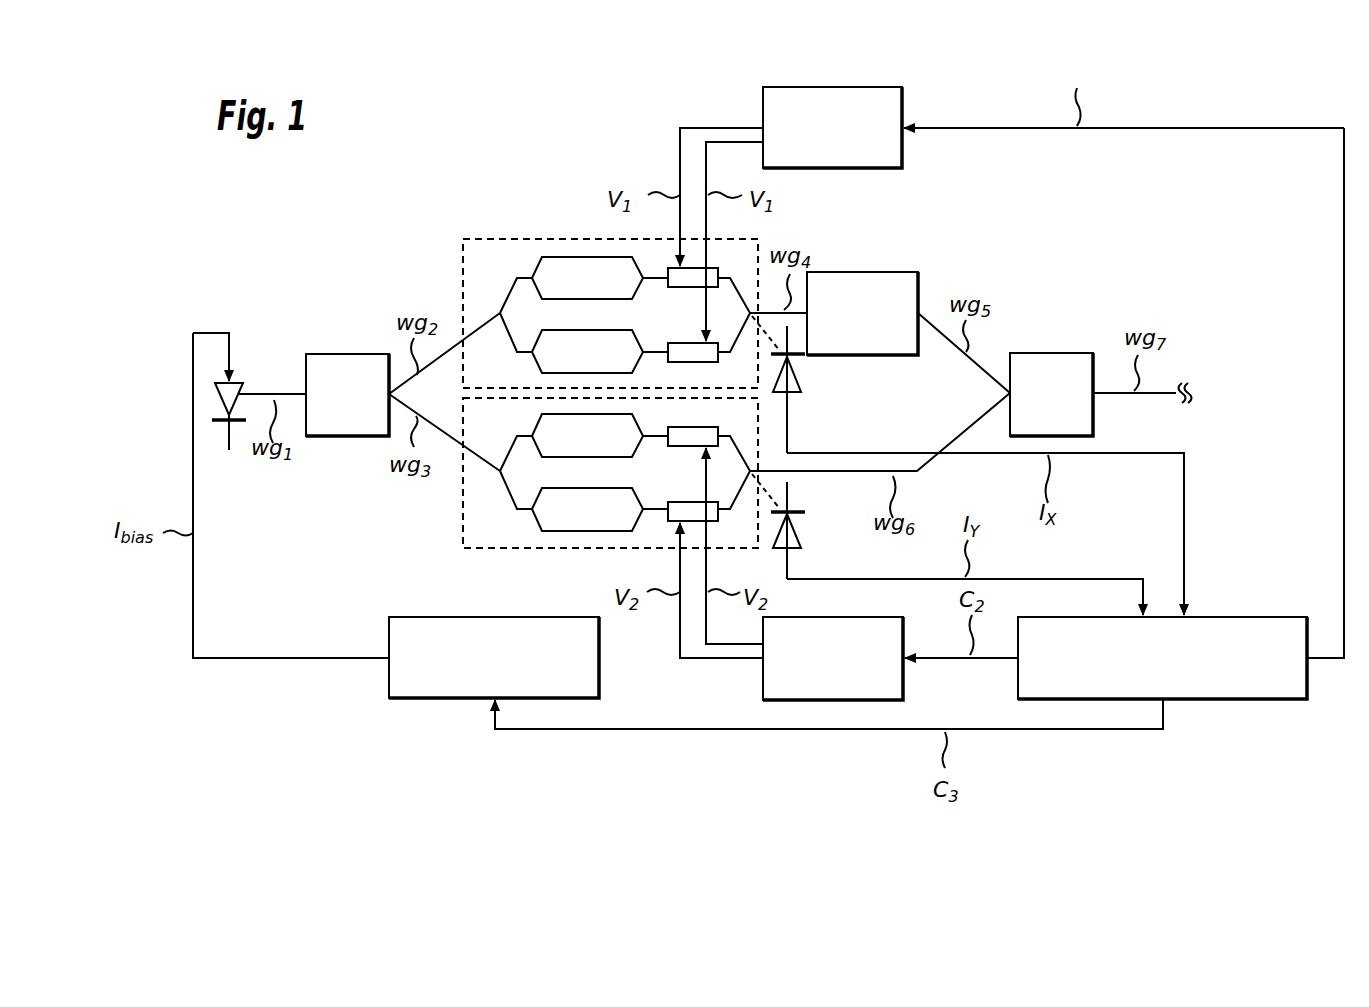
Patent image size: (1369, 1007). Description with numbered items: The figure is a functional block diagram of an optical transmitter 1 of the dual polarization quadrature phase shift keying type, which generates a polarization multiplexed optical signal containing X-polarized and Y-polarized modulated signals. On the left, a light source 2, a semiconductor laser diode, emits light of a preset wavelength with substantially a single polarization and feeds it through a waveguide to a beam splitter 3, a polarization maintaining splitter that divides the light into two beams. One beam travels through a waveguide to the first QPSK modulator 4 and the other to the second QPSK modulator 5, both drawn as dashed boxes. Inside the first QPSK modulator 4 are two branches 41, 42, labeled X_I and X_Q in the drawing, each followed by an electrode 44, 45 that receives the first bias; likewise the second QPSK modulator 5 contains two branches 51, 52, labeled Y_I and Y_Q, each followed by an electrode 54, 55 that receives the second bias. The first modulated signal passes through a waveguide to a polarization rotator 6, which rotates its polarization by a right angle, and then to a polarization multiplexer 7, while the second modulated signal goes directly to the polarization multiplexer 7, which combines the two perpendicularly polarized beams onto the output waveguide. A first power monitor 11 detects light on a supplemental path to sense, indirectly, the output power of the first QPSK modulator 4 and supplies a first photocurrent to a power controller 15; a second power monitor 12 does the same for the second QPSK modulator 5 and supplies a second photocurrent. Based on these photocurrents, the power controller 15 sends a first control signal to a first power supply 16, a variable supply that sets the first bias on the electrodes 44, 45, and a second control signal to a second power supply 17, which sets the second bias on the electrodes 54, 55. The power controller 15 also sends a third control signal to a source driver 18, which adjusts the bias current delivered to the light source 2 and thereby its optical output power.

The optical transmitter 1 is at (1220, 90).
The light source 2 is at (237, 380).
The beam splitter 3 is at (365, 352).
The first QPSK modulator 4 is at (463, 266).
The second QPSK modulator 5 is at (462, 496).
The polarization rotator 6 is at (876, 272).
The polarization multiplexer 7 is at (1069, 350).
The first power monitor 11 is at (800, 372).
The second power monitor 12 is at (800, 530).
The power controller 15 is at (1268, 616).
The first power supply 16 is at (853, 87).
The second power supply 17 is at (850, 617).
The source driver 18 is at (530, 617).
The X_I Mach-Zehnder modulator 41 is at (617, 253).
The X_Q Mach-Zehnder modulator 42 is at (617, 327).
The electrode 44 is at (711, 268).
The electrode 45 is at (712, 362).
The Y_I Mach-Zehnder modulator 51 is at (617, 410).
The Y_Q Mach-Zehnder modulator 52 is at (617, 485).
The electrode 54 is at (711, 427).
The electrode 55 is at (712, 521).